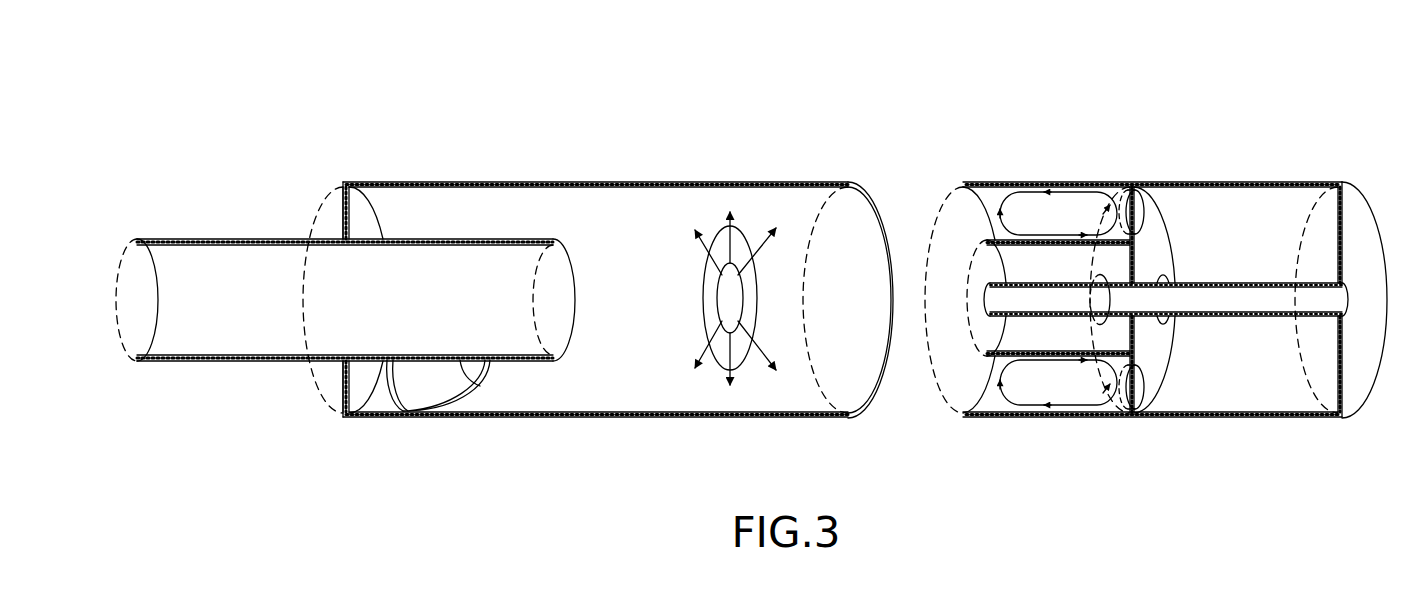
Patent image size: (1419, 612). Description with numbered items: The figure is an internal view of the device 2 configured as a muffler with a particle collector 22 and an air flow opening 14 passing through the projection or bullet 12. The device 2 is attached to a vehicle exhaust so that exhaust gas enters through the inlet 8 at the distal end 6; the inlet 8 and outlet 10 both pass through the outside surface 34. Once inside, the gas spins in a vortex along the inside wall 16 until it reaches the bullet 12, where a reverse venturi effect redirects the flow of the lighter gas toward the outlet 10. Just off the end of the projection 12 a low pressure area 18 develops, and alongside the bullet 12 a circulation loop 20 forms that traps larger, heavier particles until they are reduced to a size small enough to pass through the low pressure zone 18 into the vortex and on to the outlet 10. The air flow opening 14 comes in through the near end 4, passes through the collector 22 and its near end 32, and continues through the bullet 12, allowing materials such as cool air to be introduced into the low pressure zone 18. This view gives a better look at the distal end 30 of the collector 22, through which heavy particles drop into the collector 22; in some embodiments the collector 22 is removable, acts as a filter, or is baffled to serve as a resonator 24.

The device 2 is at (652, 112).
The near end 4 is at (1128, 204).
The distal end 6 is at (343, 204).
The inlet 8 is at (413, 397).
The outlet 10 is at (215, 362).
The projection or bullet 12 is at (993, 333).
The air flow opening 14 is at (1203, 303).
The inside wall 16 is at (606, 412).
The low pressure area 18 is at (745, 233).
The circulation loop 20 is at (1065, 191).
The particle collector 22 is at (1288, 396).
The resonator 24 is at (1262, 210).
The distal end of the collector 30 is at (1125, 409).
The near end of the collector 32 is at (1113, 393).
The outside surface 34 is at (1365, 402).